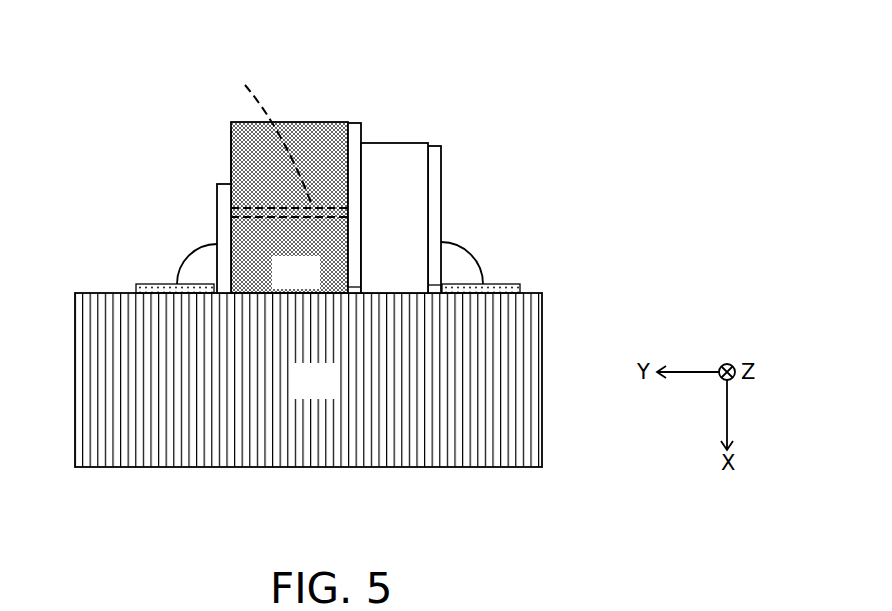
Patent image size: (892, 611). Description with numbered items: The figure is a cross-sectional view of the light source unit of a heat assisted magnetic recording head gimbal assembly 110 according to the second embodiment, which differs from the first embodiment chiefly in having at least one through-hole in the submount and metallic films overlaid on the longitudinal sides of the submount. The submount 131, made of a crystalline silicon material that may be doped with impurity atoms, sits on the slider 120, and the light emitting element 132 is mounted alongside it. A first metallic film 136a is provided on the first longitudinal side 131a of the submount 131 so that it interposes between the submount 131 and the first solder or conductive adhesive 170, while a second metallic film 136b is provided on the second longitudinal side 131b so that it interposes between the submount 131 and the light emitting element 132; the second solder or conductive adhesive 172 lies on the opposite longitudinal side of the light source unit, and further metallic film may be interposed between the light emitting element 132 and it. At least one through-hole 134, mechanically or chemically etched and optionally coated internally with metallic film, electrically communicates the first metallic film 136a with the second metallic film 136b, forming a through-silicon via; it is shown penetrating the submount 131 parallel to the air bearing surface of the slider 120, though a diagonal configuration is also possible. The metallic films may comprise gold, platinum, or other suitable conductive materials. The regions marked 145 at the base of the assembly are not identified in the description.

The head gimbal assembly 110 is at (148, 36).
The slider 120 is at (329, 392).
The submount 131 is at (305, 283).
The first longitudinal side 131a is at (231, 152).
The second longitudinal side 131b is at (348, 155).
The light emitting element 132 is at (405, 225).
The through-hole 134 is at (272, 134).
The first metallic film 136a is at (223, 189).
The second metallic film 136b is at (356, 128).
The source/drain contact 145 is at (148, 284).
The first solder or conductive adhesive 170 is at (197, 273).
The second solder or conductive adhesive 172 is at (457, 277).